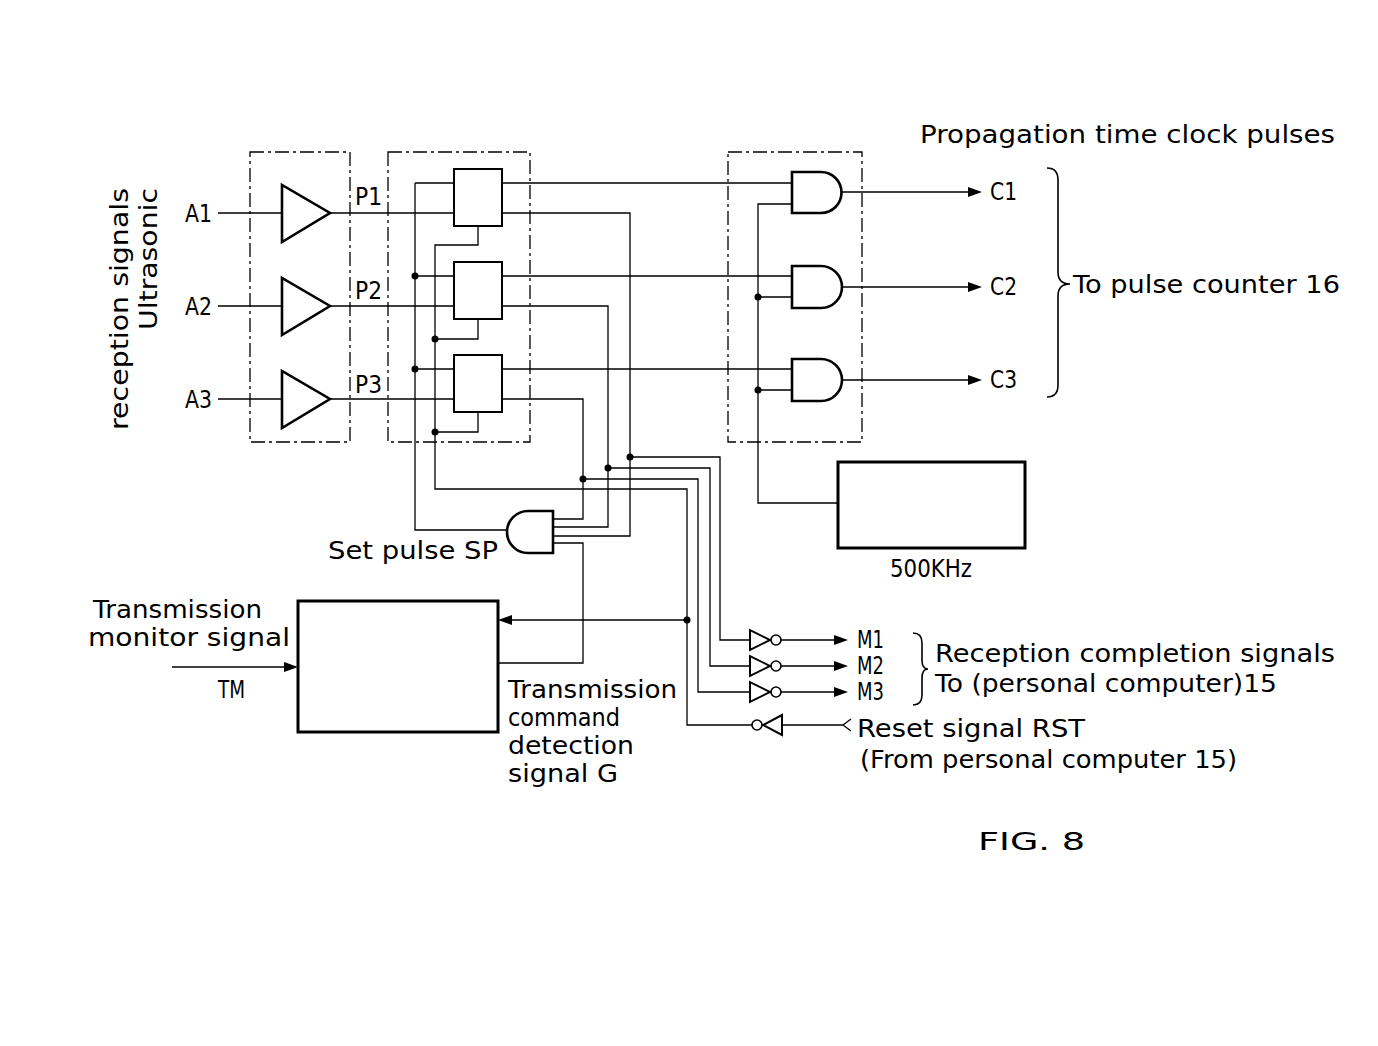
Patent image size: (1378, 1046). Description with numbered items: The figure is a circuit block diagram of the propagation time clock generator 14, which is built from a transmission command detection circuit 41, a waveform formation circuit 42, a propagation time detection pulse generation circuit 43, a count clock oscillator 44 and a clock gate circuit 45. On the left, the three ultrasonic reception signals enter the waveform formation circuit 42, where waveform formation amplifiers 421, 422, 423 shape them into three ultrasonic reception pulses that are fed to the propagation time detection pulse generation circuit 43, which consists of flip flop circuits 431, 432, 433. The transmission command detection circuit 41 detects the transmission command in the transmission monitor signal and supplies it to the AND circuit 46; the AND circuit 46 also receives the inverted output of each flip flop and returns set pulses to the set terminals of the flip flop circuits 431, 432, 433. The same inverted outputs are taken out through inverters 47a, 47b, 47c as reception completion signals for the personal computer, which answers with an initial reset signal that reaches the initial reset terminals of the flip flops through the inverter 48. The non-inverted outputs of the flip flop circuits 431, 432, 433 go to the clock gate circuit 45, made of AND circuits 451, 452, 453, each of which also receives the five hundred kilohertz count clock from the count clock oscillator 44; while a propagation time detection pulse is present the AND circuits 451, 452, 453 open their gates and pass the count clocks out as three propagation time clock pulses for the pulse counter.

The propagation time clock generator 14 is at (473, 766).
The transmission command detection circuit 41 is at (398, 735).
The waveform formation circuit 42 is at (283, 150).
The waveform formation amplifier 421 is at (304, 198).
The waveform formation amplifier 422 is at (304, 291).
The waveform formation amplifier 423 is at (304, 384).
The propagation time detection pulse generation circuit 43 is at (466, 150).
The flip flop circuit 431 is at (502, 176).
The flip flop circuit 432 is at (502, 270).
The flip flop circuit 433 is at (502, 362).
The count clock oscillator 44 is at (1025, 500).
The clock gate circuit 45 is at (815, 150).
The AND circuit 451 is at (842, 178).
The AND circuit 452 is at (842, 273).
The AND circuit 453 is at (842, 366).
The AND circuit 46 is at (536, 557).
The inverter 47a is at (762, 630).
The inverter 47b is at (765, 658).
The inverter 47c is at (752, 688).
The inverter 48 is at (770, 738).